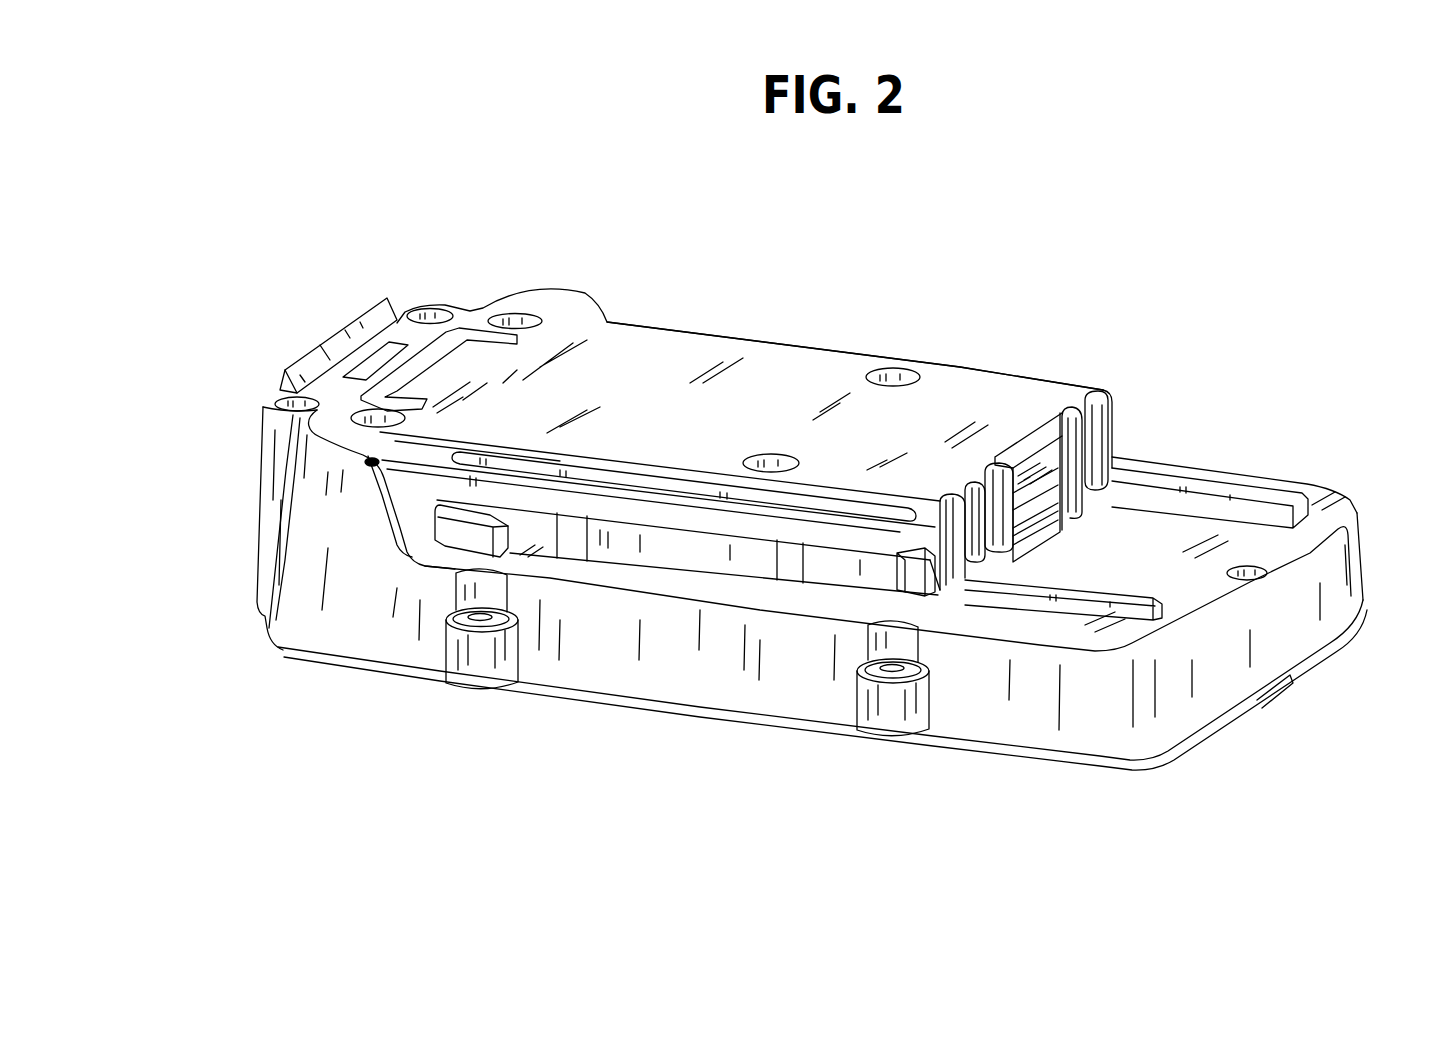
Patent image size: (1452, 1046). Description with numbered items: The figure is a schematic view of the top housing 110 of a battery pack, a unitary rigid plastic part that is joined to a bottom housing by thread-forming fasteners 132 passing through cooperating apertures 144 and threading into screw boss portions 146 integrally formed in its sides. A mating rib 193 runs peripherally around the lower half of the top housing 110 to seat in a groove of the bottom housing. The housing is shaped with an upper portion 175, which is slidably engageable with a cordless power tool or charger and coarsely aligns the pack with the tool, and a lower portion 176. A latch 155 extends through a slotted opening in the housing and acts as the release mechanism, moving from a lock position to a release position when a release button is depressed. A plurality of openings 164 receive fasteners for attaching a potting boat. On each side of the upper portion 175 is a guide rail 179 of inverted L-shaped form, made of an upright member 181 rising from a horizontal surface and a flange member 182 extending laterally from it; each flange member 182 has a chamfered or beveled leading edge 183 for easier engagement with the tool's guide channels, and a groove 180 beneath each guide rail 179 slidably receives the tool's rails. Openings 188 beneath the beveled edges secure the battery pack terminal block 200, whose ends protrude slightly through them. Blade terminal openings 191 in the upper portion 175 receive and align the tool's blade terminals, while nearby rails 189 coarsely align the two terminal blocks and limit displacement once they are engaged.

The top housing 110 is at (810, 509).
The thread-forming fasteners 132 is at (478, 620).
The apertures 144 is at (431, 309).
The screw boss portions 146 is at (458, 675).
The latch 155 is at (340, 340).
The openings 164 is at (537, 313).
The upper portion 175 is at (1007, 373).
The lower portion 176 is at (1057, 758).
The guide rails 179 is at (620, 507).
The groove 180 is at (690, 560).
The upright member 181 is at (1058, 472).
The flange member 182 is at (935, 555).
The chamfered or beveled leading edge 183 is at (912, 547).
The openings 188 is at (947, 563).
The rails 189 is at (1203, 487).
The blade terminal openings 191 is at (1107, 443).
The mating rib 193 is at (1028, 523).
The battery pack terminal block 200 is at (1050, 458).